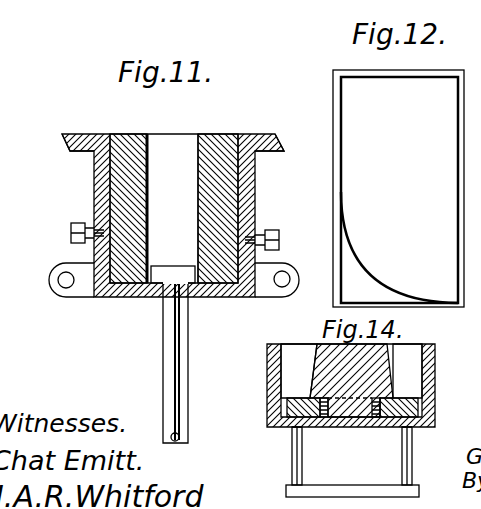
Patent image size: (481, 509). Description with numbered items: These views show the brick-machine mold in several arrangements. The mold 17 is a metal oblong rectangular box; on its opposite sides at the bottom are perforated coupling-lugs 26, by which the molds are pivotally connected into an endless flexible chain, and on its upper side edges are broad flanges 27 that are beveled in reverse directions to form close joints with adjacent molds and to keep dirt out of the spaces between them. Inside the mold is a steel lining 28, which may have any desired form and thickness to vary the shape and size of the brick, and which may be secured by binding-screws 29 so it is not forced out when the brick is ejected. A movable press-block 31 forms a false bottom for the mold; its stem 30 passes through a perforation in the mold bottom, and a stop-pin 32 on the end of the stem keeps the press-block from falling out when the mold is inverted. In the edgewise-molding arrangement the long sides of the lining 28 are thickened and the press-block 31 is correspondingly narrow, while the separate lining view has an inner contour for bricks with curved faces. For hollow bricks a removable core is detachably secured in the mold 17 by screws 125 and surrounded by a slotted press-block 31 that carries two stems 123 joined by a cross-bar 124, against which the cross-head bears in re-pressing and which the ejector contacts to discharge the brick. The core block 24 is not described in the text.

In FIG. 11, the mold 17 is at (94, 186).
In FIG. 14, the mold 17 is at (267, 359).
In FIG. 14, the central core block 24 is at (378, 372).
In FIG. 11, the coupling-lugs 26 is at (50, 275).
In FIG. 11, the flanges 27 is at (62, 137).
In FIG. 11, the mold-lining 28 is at (147, 133).
In FIG. 12, the mold-lining 28 is at (362, 250).
In FIG. 14, the mold-lining 28 is at (284, 354).
In FIG. 11, the binding-screws 29 is at (71, 232).
In FIG. 11, the stem 30 is at (163, 327).
In FIG. 11, the press-block 31 is at (174, 272).
In FIG. 14, the press-block 31 is at (287, 404).
In FIG. 11, the stop-pin 32 is at (178, 434).
In FIG. 14, the stems 123 is at (402, 459).
In FIG. 14, the cross-bar 124 is at (352, 481).
In FIG. 14, the screws 125 is at (378, 427).